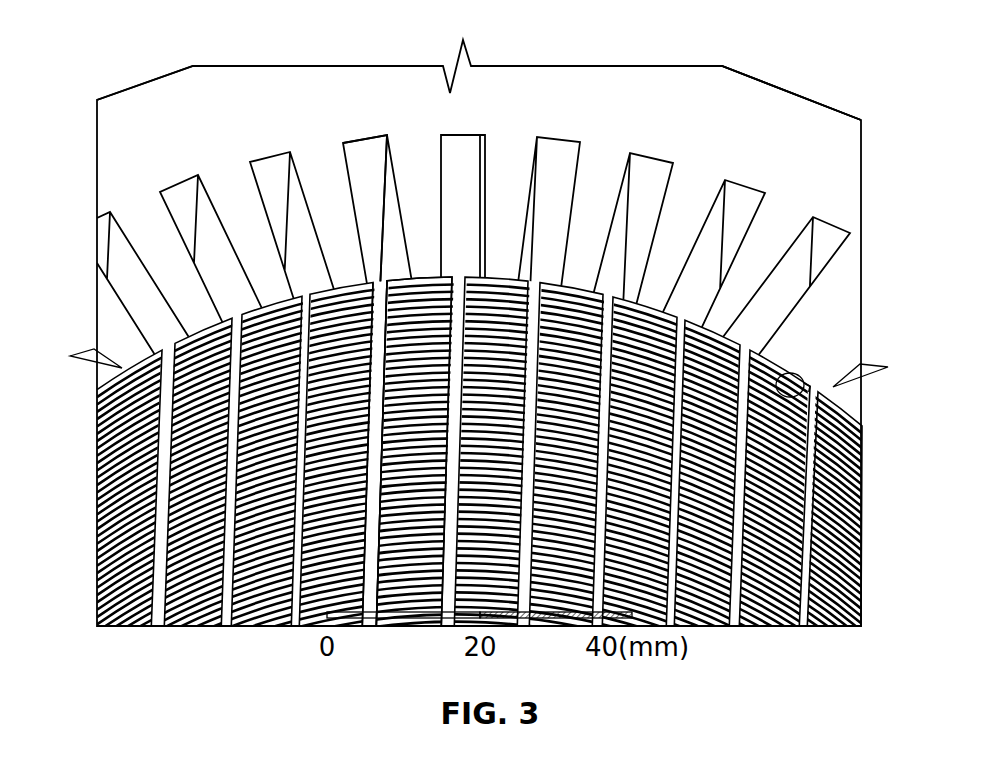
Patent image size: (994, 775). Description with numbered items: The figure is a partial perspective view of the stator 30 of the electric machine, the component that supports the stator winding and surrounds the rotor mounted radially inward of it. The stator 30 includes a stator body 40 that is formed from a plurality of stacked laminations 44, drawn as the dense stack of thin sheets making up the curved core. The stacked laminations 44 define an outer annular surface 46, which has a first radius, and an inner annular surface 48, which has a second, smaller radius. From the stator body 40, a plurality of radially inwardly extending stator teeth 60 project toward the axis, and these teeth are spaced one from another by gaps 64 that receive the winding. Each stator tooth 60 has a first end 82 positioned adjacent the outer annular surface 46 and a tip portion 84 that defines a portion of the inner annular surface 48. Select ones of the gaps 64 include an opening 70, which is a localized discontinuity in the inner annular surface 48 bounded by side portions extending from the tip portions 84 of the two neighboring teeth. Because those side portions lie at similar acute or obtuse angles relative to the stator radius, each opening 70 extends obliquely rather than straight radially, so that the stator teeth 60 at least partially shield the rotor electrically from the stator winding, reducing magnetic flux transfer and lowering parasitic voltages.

The stator 30 is at (879, 178).
The stator body 40 is at (824, 128).
The stacked laminations 44 is at (851, 440).
The outer annular surface 46 is at (738, 74).
The inner annular surface 48 is at (802, 396).
The radially inwardly extending stator tooth 60 is at (380, 196).
The gap 64 is at (463, 187).
The opening 70 is at (386, 290).
The first end 82 is at (413, 140).
The tip portion 84 is at (422, 272).